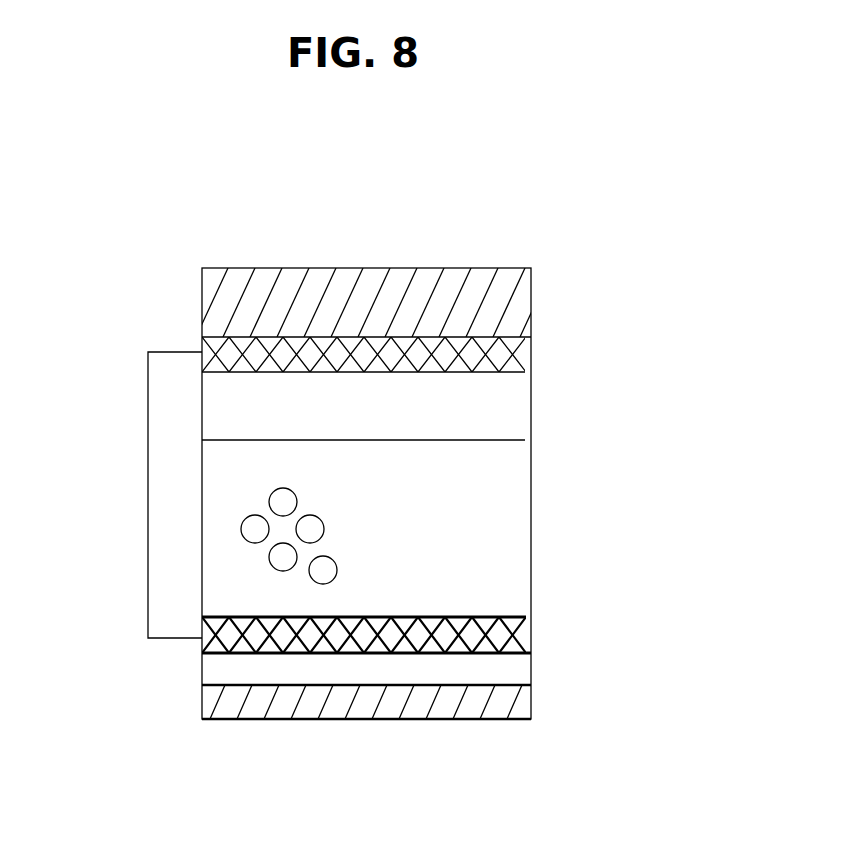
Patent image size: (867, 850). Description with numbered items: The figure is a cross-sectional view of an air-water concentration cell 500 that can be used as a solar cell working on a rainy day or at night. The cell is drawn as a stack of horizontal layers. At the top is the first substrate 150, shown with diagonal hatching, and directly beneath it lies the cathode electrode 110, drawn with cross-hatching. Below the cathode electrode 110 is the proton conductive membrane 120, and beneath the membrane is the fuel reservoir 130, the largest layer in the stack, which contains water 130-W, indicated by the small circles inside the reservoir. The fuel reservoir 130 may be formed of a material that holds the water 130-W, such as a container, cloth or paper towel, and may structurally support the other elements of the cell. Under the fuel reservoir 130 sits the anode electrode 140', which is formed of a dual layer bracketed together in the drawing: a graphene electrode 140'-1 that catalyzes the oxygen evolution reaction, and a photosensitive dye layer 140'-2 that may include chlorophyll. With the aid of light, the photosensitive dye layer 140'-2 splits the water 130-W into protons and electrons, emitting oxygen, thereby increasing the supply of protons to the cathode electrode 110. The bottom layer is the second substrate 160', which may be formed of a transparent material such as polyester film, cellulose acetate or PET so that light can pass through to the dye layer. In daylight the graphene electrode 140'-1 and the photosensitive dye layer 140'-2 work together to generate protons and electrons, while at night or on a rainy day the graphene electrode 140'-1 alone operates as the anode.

The air-water concentration cell 500 is at (210, 160).
The first substrate 150 is at (531, 302).
The cathode electrode 110 is at (531, 352).
The proton conductive membrane 120 is at (531, 405).
The fuel reservoir 130 is at (531, 547).
The water 130-W is at (240, 542).
The anode electrode 140' is at (500, 649).
The graphene electrode 140'-1 is at (451, 633).
The photosensitive dye layer 140'-2 is at (451, 668).
The second substrate 160' is at (430, 702).